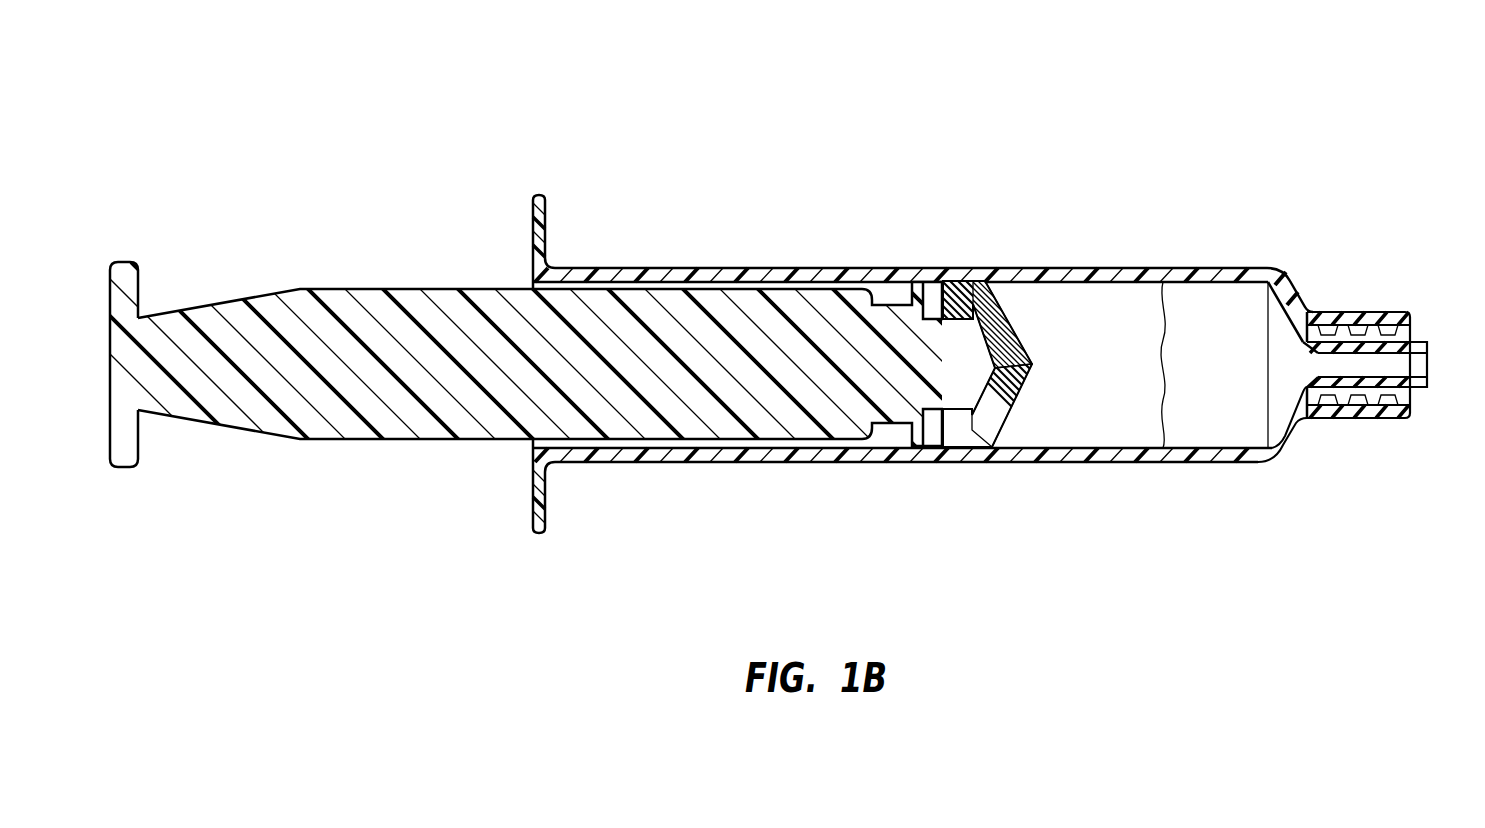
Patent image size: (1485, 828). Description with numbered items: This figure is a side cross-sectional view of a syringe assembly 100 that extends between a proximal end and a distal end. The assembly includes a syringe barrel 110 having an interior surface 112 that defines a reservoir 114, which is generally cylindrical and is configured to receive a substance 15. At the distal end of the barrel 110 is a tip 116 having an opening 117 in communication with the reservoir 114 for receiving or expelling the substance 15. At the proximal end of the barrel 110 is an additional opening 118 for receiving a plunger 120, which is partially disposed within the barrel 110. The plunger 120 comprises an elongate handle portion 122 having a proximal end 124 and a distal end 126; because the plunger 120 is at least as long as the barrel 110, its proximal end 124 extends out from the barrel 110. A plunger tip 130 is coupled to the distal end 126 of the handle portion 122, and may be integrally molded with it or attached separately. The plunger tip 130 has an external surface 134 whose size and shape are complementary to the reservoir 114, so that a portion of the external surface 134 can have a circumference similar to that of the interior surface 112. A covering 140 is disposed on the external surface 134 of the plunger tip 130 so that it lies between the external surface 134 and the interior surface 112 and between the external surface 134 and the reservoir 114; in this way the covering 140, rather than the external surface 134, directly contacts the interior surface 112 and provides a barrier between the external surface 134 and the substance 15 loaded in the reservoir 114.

The syringe assembly 100 is at (1183, 167).
The syringe barrel 110 is at (1293, 437).
The interior surface 112 is at (1225, 448).
The reservoir 114 is at (1240, 312).
The tip 116 is at (1387, 312).
The opening 117 is at (1432, 348).
The additional opening 118 is at (533, 450).
The plunger 120 is at (290, 285).
The elongate handle portion 122 is at (323, 420).
The proximal end 124 is at (105, 452).
The distal end 126 is at (995, 366).
The plunger tip 130 is at (975, 272).
The external surface 134 is at (1020, 400).
The covering 140 is at (1028, 334).
The substance 15 is at (1130, 427).